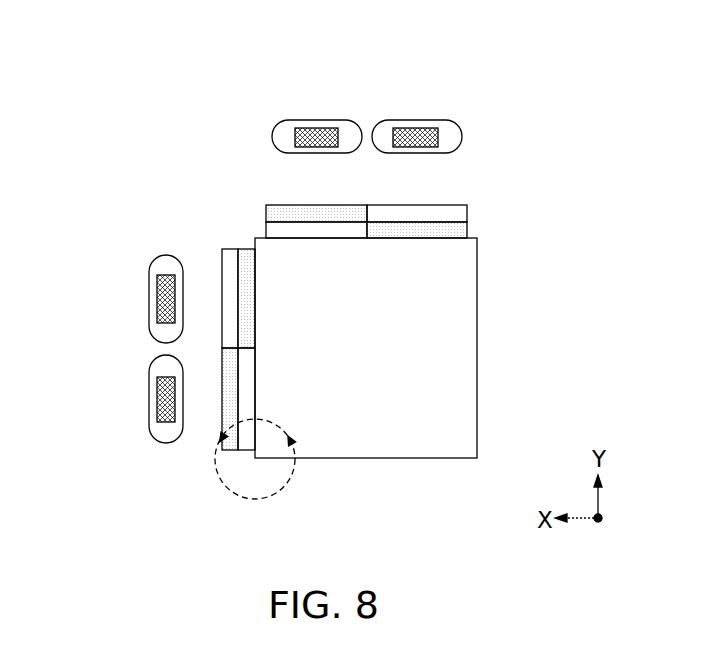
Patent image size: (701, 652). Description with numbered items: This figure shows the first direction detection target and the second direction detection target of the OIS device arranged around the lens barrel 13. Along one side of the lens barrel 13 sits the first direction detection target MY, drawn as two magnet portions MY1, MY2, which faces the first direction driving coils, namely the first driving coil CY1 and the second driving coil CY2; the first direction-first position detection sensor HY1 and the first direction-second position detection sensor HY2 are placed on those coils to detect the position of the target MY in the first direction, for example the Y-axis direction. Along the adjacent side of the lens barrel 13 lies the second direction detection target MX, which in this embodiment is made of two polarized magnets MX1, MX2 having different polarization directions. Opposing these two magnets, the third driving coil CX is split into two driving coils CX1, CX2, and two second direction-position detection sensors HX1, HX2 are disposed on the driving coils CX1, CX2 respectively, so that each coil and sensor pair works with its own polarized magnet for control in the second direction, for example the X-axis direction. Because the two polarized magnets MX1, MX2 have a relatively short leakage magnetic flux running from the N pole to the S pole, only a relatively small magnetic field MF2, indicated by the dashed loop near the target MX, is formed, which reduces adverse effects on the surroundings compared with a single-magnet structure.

The lens barrel 13 is at (477, 395).
The first driving coil CY1 is at (316, 120).
The second driving coil CY2 is at (417, 120).
The first direction-first position detection sensor HY1 is at (295, 140).
The first direction-second position detection sensor HY2 is at (438, 141).
The third driving coil CX is at (77, 280).
The driving coil CX1 is at (149, 400).
The driving coil CX2 is at (149, 300).
The second direction-position detection sensor HX1 is at (165, 422).
The second direction-position detection sensor HX2 is at (165, 275).
The first direction detection target MY is at (562, 253).
The first direction detection target magnet MY1 is at (322, 228).
The first direction detection target magnet MY2 is at (413, 232).
The second direction detection target MX is at (427, 515).
The polarized magnet MX1 is at (230, 393).
The polarized magnet MX2 is at (232, 333).
The small magnetic field MF2 is at (255, 498).